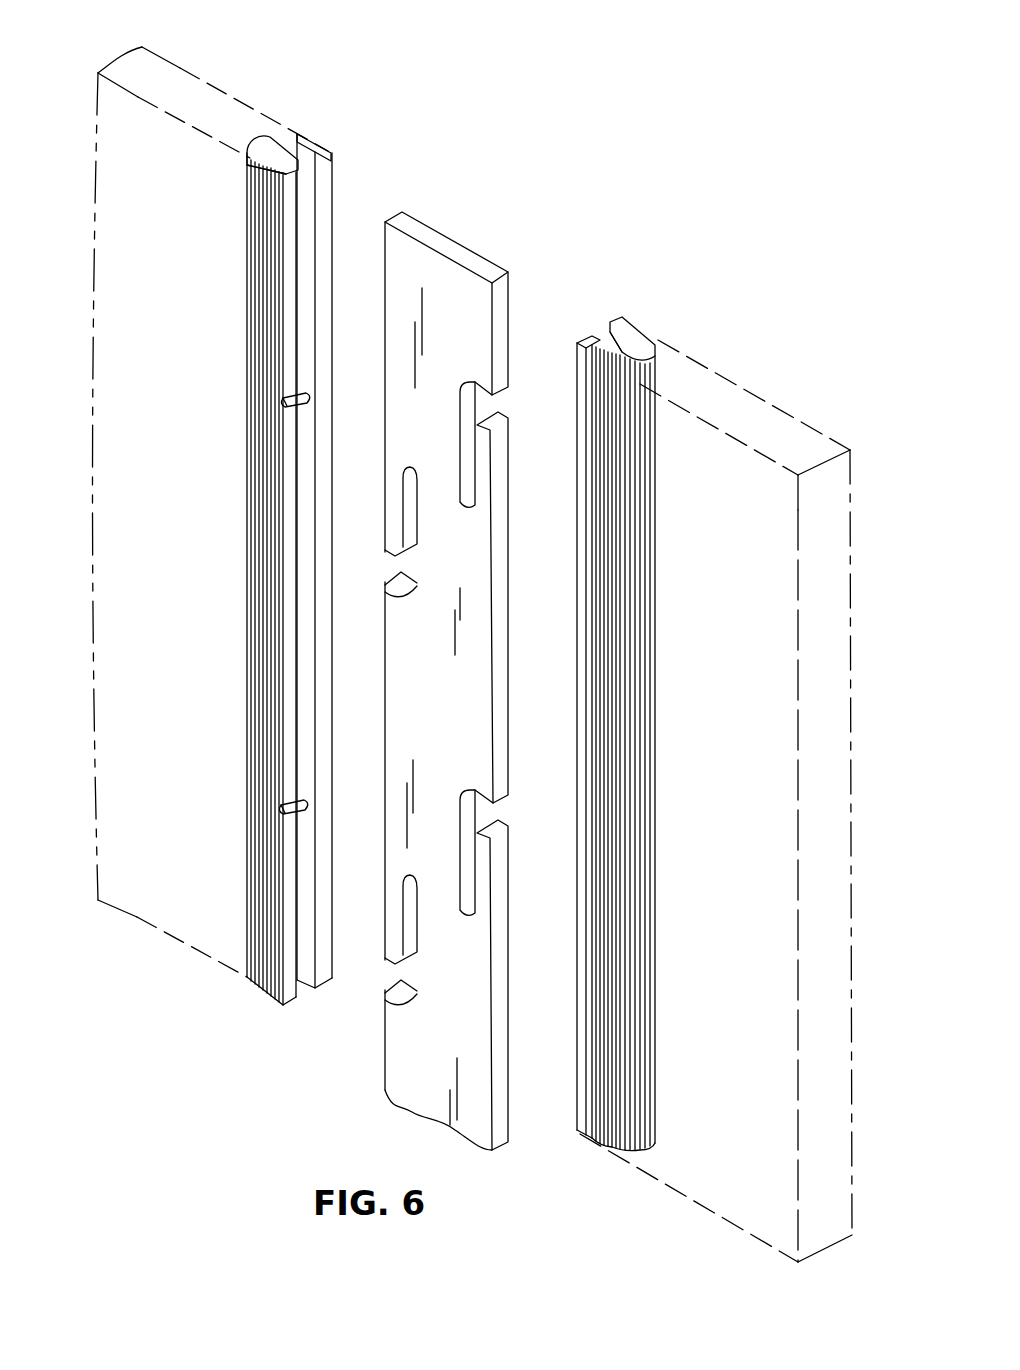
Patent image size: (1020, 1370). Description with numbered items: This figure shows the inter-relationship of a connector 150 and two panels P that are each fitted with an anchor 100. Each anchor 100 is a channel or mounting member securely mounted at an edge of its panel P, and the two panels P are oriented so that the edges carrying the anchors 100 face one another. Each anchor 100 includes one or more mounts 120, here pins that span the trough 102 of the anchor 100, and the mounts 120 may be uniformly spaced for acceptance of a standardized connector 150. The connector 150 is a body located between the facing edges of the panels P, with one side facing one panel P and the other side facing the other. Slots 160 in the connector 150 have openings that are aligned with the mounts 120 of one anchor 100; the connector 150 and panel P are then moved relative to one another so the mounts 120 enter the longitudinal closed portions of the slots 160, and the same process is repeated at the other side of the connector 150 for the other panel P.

The panel P is at (218, 107).
The anchor 100 is at (323, 137).
The trough 102 is at (304, 988).
The mount 120 is at (300, 394).
The connector 150 is at (458, 229).
The slot 160 is at (510, 398).